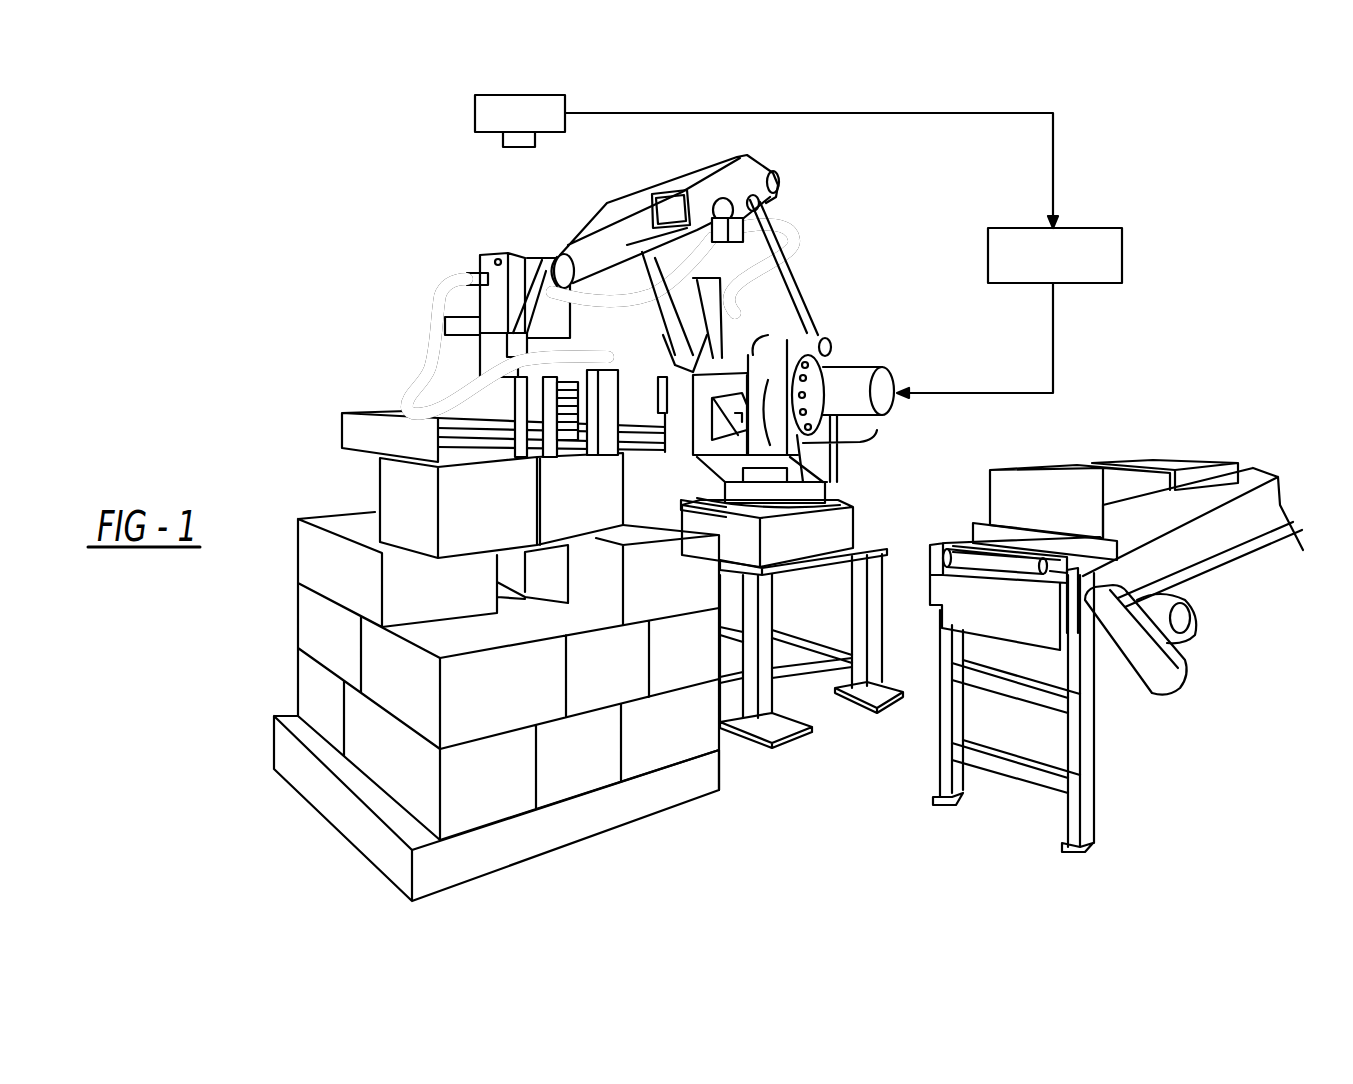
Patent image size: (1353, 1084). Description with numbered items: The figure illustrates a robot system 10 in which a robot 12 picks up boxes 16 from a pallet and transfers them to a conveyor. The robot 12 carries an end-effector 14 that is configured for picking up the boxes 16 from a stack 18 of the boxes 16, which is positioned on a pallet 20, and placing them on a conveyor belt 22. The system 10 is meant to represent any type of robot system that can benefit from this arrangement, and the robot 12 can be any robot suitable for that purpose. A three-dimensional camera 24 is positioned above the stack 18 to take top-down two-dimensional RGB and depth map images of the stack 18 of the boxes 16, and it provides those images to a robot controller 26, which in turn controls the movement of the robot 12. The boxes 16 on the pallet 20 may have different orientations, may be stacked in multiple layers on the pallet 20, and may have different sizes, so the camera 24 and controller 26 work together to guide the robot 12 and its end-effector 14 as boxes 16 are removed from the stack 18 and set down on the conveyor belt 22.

The robot system 10 is at (1168, 134).
The robot 12 is at (813, 267).
The end-effector 14 is at (355, 428).
The boxes 16 is at (393, 477).
The stack 18 is at (276, 610).
The pallet 20 is at (613, 812).
The conveyor belt 22 is at (1220, 548).
The 3D camera 24 is at (475, 113).
The robot controller 26 is at (1123, 255).